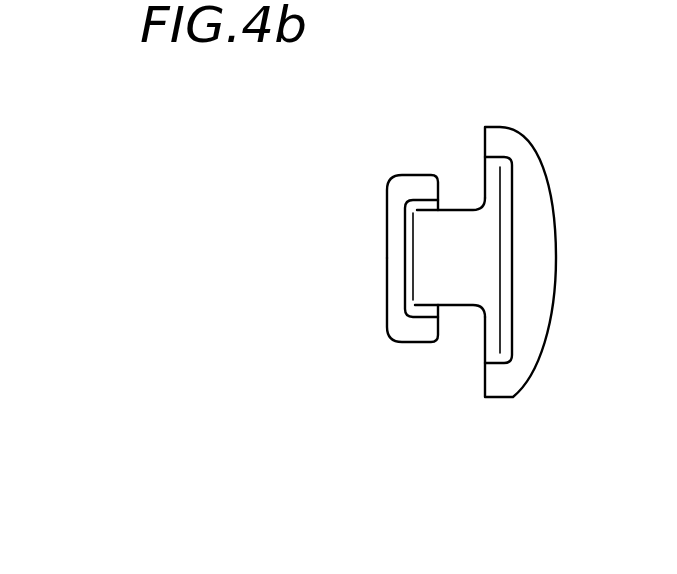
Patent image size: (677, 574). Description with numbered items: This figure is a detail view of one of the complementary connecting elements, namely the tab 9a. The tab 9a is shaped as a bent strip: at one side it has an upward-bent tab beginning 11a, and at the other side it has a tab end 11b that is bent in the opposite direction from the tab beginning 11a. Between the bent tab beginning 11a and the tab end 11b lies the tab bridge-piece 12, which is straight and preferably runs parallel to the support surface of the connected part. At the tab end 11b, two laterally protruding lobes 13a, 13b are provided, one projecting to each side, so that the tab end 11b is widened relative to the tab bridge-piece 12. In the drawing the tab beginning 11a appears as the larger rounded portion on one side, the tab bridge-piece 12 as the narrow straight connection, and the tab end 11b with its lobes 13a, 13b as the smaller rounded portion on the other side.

The tab 9a is at (363, 259).
The tab beginning 11a is at (502, 280).
The tab end 11b is at (412, 298).
The tab bridge-piece 12 is at (440, 245).
The lobe 13a is at (430, 333).
The lobe 13b is at (422, 187).